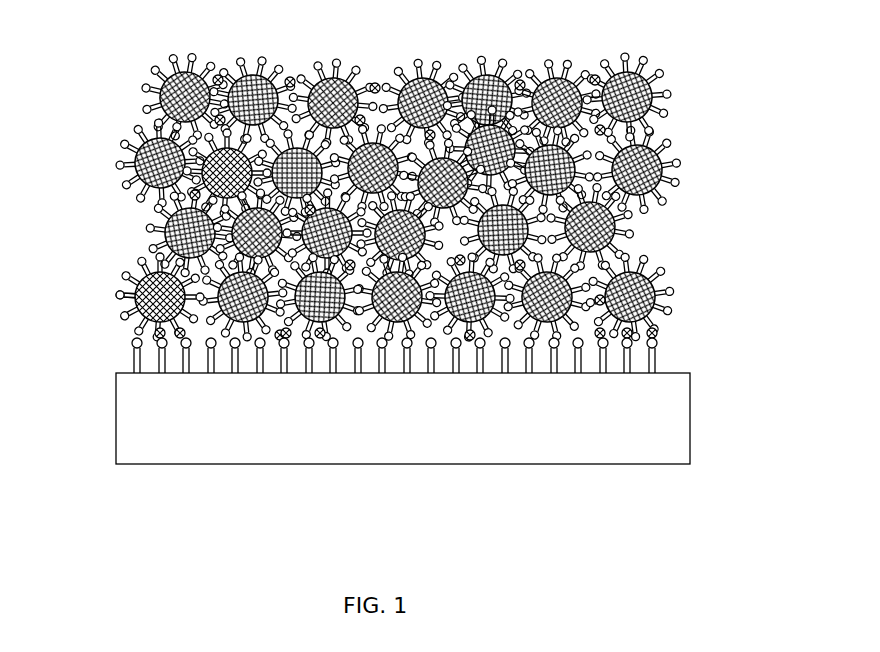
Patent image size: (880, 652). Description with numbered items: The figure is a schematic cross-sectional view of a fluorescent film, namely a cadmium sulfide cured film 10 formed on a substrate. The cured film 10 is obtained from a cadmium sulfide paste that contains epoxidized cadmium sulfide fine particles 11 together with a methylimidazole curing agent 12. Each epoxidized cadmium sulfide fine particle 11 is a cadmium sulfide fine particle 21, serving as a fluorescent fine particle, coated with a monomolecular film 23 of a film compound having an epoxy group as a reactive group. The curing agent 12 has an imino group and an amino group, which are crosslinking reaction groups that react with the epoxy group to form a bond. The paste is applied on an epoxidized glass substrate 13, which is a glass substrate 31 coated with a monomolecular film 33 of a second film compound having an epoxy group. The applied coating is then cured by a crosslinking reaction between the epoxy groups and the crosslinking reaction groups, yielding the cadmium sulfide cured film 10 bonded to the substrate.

The cadmium sulfide cured film 10 is at (108, 205).
The epoxidized cadmium sulfide fine particles 11 is at (628, 75).
The 2-methylimidazole 12 is at (652, 333).
The epoxidized glass substrate 13 is at (697, 397).
The cadmium sulfide fine particles 21 is at (138, 300).
The monomolecular film 23 is at (120, 289).
The glass substrate 31 is at (366, 448).
The monomolecular film 33 is at (413, 372).